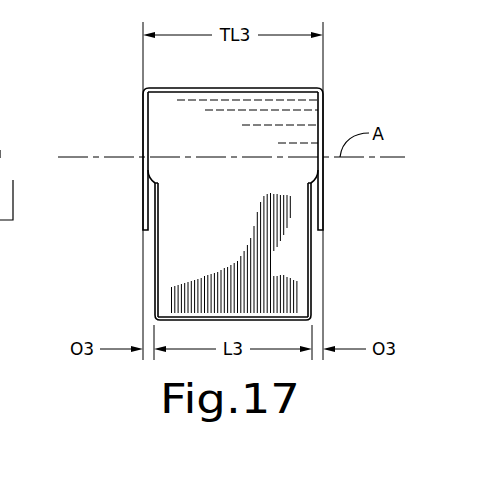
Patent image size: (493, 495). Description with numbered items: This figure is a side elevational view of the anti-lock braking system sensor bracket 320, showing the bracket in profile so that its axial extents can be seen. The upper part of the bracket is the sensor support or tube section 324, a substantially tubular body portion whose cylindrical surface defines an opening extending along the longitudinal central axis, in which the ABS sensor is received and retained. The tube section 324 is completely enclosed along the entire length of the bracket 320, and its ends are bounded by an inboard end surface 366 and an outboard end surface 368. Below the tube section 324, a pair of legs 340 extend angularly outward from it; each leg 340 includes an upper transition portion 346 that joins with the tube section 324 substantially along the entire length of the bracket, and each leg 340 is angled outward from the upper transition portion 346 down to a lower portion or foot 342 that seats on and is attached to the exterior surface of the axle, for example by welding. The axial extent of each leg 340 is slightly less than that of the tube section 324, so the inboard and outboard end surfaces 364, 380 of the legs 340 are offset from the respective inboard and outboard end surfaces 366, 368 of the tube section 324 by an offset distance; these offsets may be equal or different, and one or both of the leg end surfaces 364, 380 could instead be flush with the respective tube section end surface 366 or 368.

The ABS sensor bracket 320 is at (124, 283).
The tube section 324 is at (203, 128).
The legs 340 is at (228, 213).
The foot 342 is at (285, 316).
The upper transition portion 346 is at (182, 158).
The inboard end surface of leg 364 is at (312, 273).
The inboard end surface of tube section 366 is at (322, 111).
The outboard end surface of tube section 368 is at (143, 111).
The outboard end surface of leg 380 is at (155, 260).